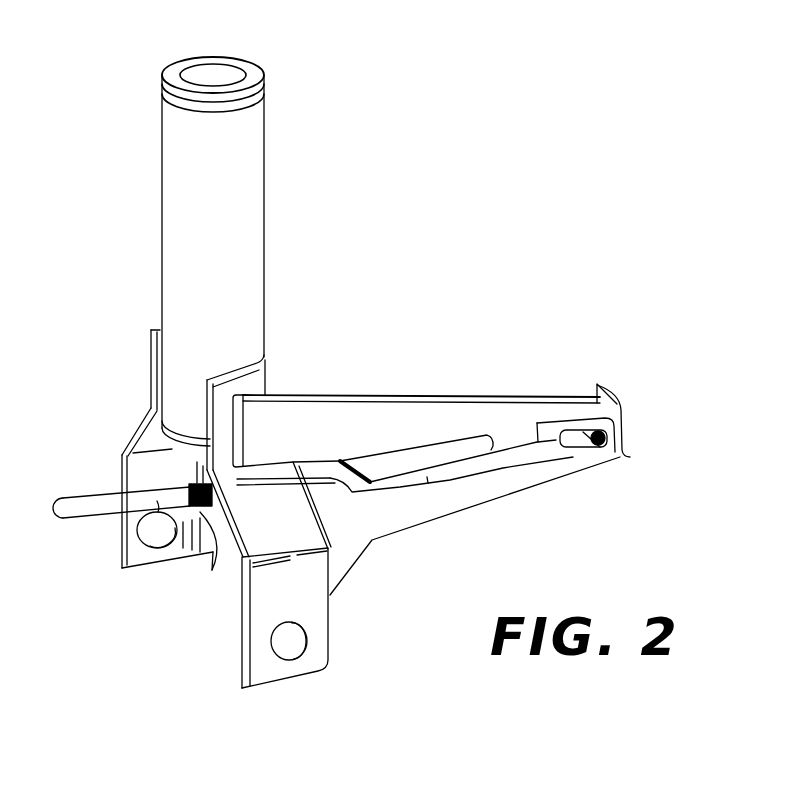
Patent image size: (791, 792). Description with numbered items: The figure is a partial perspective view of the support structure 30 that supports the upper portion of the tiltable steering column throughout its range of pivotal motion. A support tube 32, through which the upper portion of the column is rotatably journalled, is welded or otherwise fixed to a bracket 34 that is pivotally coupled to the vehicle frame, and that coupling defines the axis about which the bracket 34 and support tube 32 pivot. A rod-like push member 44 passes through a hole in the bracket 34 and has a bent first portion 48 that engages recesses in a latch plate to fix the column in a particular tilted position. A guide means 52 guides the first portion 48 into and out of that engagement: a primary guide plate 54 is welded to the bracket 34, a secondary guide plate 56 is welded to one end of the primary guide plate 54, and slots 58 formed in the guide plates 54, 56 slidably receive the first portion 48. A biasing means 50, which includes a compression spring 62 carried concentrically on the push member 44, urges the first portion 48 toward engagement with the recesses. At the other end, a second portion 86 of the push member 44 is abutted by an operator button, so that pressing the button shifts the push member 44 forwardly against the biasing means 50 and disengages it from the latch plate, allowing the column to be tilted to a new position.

The support structure 30 is at (123, 377).
The support tube 32 is at (162, 187).
The bracket 34 is at (330, 655).
The push member 44 is at (500, 468).
The bent first portion 48 is at (573, 434).
The biasing means 50 is at (173, 482).
The guide means 52 is at (588, 366).
The primary guide plate 54 is at (405, 395).
The secondary guide plate 56 is at (623, 455).
The slots 58 is at (600, 433).
The compression spring 62 is at (213, 569).
The second portion 86 is at (92, 518).